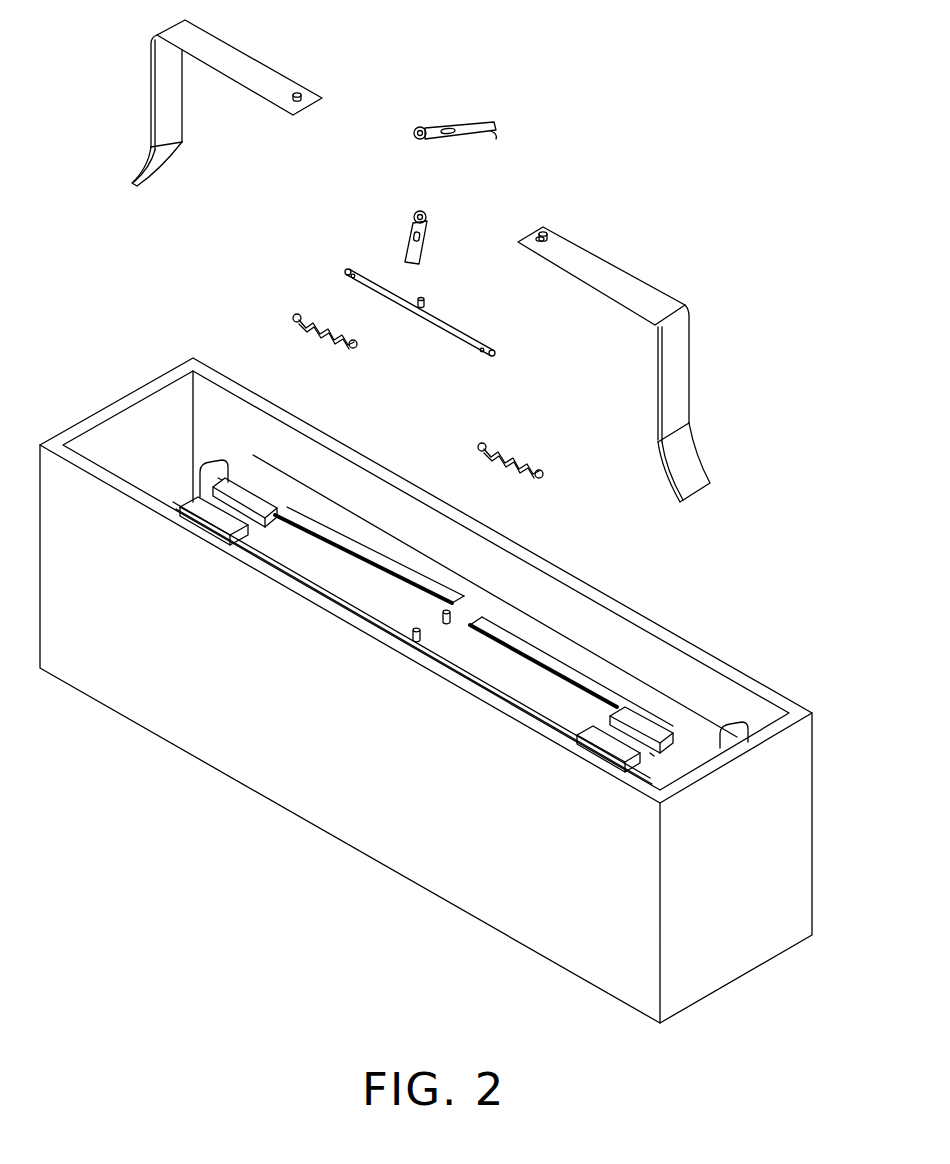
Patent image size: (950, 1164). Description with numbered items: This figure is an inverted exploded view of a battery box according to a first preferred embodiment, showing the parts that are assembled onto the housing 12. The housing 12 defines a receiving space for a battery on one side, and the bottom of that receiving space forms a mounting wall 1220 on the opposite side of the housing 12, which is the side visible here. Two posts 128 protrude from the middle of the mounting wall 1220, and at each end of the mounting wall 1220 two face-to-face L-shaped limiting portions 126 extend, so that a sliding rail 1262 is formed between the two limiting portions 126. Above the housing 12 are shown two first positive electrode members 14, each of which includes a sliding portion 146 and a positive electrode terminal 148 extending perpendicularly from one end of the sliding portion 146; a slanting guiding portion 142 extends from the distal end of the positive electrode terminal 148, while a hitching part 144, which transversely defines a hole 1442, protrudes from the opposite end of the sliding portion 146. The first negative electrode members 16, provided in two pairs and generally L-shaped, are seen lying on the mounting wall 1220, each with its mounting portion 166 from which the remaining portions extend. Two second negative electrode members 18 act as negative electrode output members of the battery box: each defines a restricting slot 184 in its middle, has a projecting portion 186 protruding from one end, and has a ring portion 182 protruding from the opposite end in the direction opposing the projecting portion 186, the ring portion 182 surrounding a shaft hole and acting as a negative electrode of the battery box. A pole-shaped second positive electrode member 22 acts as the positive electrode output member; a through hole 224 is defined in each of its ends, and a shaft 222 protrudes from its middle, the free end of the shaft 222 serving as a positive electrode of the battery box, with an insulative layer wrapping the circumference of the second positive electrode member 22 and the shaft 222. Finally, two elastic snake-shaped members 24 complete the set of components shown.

The housing 12 is at (290, 820).
The mounting wall 1220 is at (623, 682).
The limiting portion 126 is at (228, 522).
The sliding rail 1262 is at (220, 478).
The post 128 is at (422, 633).
The first positive electrode member 14 is at (240, 26).
The slanting guiding portion 142 is at (152, 168).
The hitching part 144 is at (303, 94).
The hole 1442 is at (538, 248).
The sliding portion 146 is at (251, 70).
The positive electrode terminal 148 is at (168, 100).
The first negative electrode member 16 is at (383, 622).
The mounting portion 166 is at (308, 590).
The second negative electrode member 18 is at (508, 111).
The ring portion 182 is at (414, 133).
The restricting slot 184 is at (448, 124).
The projecting portion 186 is at (494, 135).
The second positive electrode member 22 is at (490, 332).
The shaft 222 is at (425, 302).
The through hole 224 is at (347, 275).
The elastic snake-shaped member 24 is at (297, 316).